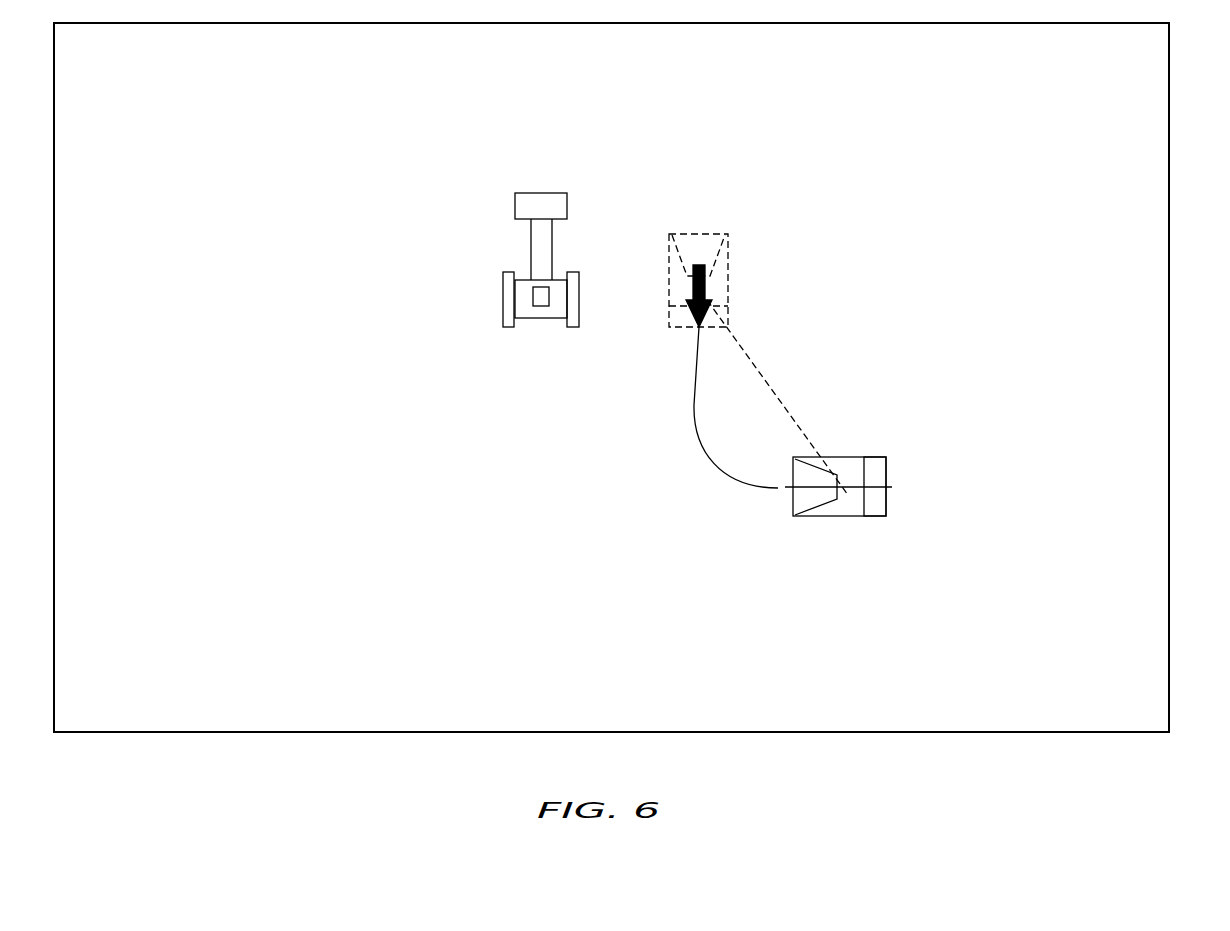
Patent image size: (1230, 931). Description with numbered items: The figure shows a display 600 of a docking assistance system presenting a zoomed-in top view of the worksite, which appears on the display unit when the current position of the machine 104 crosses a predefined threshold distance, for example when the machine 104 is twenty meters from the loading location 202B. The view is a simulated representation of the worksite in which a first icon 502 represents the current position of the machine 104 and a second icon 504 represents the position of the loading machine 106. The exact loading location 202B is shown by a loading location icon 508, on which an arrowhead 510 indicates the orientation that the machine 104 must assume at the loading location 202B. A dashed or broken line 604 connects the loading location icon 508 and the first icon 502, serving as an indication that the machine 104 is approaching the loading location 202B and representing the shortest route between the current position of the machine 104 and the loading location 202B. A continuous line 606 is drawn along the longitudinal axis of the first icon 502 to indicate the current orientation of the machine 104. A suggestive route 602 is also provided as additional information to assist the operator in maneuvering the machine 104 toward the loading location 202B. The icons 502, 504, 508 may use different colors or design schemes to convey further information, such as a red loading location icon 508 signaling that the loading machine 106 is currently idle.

The display 600 is at (1170, 43).
The loading machine 106 is at (515, 207).
The second icon 504 is at (503, 298).
The loading location icon 508 is at (727, 250).
The loading location 202B is at (728, 282).
The arrowhead 510 is at (690, 318).
The dashed line 604 is at (754, 356).
The suggestive route 602 is at (695, 427).
The continuous line 606 is at (892, 487).
The machine 104 is at (826, 518).
The first icon 502 is at (880, 518).